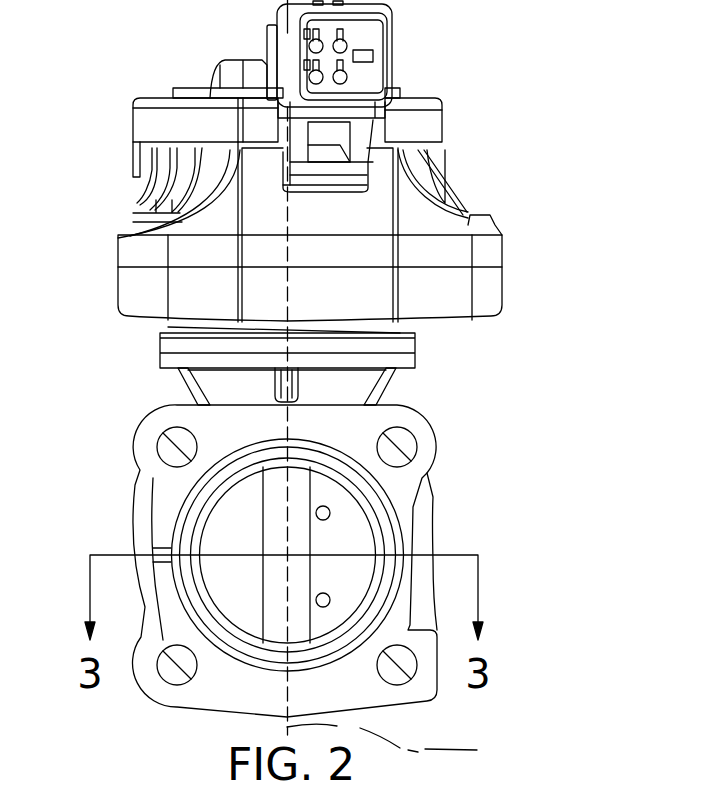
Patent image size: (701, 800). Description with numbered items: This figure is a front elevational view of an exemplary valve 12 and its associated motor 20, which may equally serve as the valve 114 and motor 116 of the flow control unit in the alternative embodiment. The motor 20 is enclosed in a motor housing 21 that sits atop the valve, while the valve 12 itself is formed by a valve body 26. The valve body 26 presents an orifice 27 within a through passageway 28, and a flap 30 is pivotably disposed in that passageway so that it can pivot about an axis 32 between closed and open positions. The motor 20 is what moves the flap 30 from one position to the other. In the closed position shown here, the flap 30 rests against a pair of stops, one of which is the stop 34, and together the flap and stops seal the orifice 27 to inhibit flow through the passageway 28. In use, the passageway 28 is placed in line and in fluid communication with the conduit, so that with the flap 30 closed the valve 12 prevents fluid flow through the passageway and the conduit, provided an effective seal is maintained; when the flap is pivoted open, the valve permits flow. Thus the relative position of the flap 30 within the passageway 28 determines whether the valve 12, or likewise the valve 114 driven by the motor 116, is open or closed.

The motor 20 is at (440, 96).
The motor 116 is at (443, 120).
The motor housing 21 is at (350, 217).
The orifice 27 is at (250, 450).
The valve 12 is at (358, 561).
The valve 114 is at (430, 497).
The valve body 26 is at (428, 542).
The through passageway 28 is at (242, 663).
The stop 34 is at (337, 490).
The flap 30 is at (246, 542).
The axis 32 is at (395, 741).